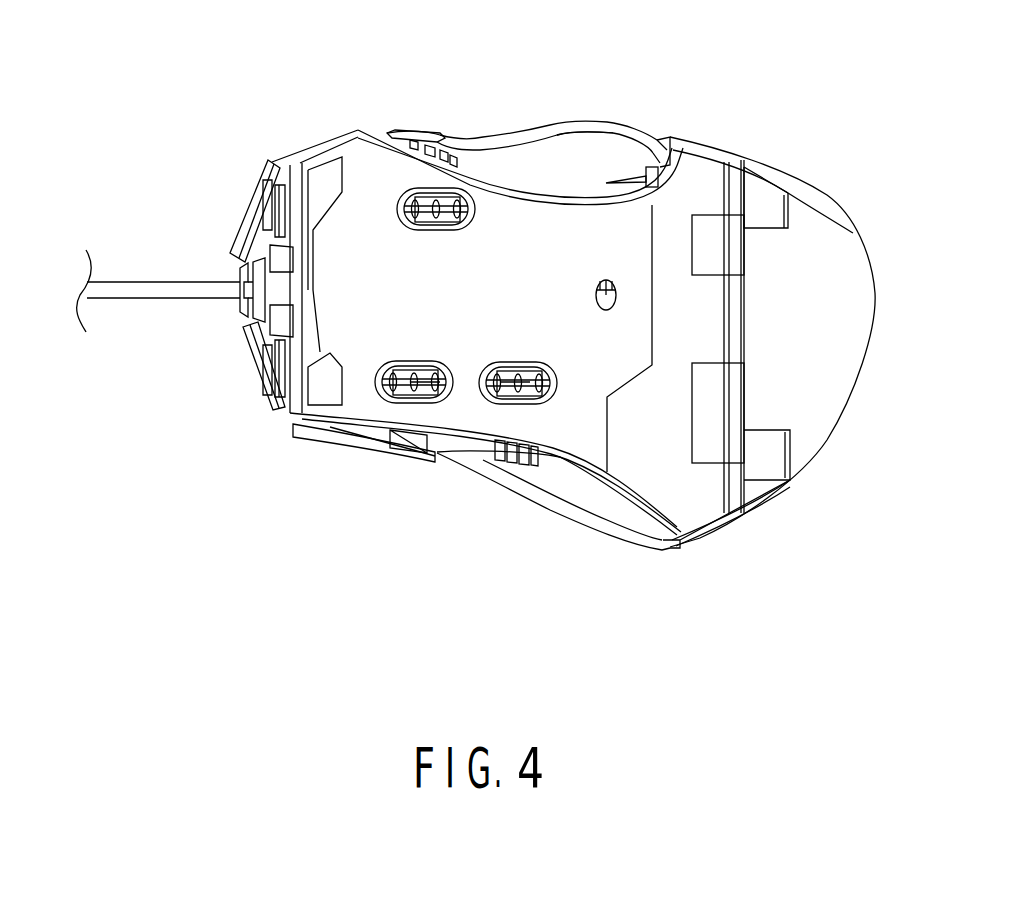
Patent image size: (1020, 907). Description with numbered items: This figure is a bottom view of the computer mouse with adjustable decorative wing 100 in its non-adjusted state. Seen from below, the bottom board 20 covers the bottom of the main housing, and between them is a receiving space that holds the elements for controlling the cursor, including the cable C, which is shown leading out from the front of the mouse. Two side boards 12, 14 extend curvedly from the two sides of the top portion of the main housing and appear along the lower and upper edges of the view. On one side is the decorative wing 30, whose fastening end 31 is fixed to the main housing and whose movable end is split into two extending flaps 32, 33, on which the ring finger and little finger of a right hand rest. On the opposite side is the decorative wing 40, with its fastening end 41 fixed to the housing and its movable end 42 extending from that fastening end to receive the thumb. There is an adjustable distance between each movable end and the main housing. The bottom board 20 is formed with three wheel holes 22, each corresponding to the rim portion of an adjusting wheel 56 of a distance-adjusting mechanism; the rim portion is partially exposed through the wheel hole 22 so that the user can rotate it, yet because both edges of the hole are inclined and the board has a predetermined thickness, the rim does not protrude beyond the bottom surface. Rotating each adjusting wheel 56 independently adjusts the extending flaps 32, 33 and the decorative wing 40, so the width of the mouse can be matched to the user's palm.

The computer mouse with adjustable decorative wing 100 is at (903, 129).
The side board 12 is at (560, 457).
The side board 14 is at (502, 184).
The bottom board 20 is at (353, 308).
The wheel hole 22 is at (413, 367).
The decorative wing 30 is at (584, 553).
The fastening end 31 is at (640, 557).
The extending flap 32 is at (487, 477).
The extending flap 33 is at (347, 448).
The decorative wing 40 is at (565, 124).
The fastening end 41 is at (630, 127).
The movable end 42 is at (425, 136).
The adjusting wheel 56 is at (498, 382).
The cable C is at (153, 290).